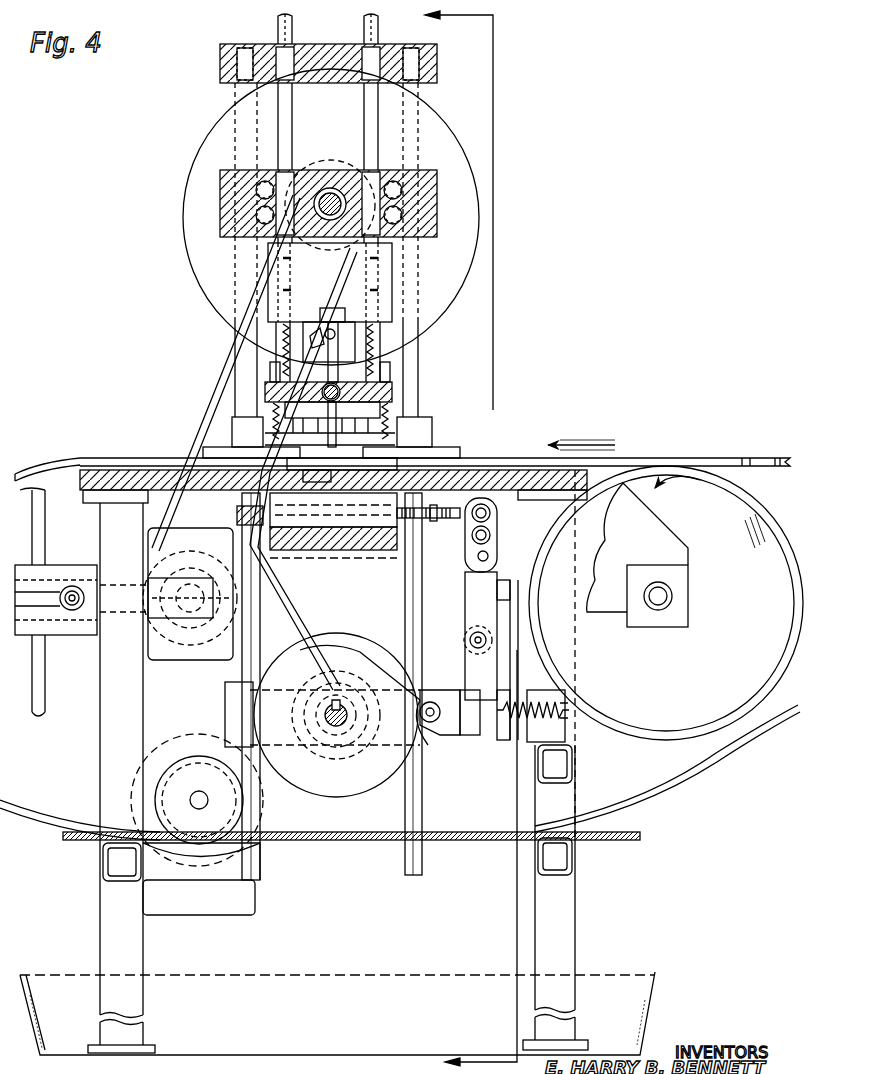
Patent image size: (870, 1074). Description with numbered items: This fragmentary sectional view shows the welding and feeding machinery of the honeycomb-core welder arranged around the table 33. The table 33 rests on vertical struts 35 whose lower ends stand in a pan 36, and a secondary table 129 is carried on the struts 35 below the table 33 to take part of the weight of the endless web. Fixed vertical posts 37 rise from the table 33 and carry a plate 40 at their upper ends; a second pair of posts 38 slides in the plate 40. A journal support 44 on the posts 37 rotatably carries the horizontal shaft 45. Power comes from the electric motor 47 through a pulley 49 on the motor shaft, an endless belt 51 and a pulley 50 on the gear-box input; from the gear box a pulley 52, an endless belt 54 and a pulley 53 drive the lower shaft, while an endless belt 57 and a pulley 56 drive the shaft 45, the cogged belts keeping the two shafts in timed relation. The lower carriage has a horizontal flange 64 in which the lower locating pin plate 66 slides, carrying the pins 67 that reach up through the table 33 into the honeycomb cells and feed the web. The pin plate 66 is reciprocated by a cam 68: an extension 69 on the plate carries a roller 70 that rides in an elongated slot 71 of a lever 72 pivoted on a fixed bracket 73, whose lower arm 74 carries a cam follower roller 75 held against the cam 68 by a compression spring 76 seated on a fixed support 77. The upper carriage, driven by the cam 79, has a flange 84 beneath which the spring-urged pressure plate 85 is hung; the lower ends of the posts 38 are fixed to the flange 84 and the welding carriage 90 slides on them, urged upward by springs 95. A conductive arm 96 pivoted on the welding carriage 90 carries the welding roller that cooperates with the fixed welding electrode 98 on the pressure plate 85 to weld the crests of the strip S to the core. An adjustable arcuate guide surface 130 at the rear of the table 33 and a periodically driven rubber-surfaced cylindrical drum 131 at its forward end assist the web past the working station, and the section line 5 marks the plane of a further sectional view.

The section line 5- 5 is at (478, 542).
The table 33 is at (115, 470).
The vertical struts 35 is at (135, 946).
The pan 36 is at (612, 982).
The vertical posts 37 is at (240, 403).
The posts 38 is at (287, 28).
The plate 40 is at (222, 63).
The journal support 44 is at (425, 192).
The horizontal shaft 45 is at (333, 190).
The electric motor 47 is at (195, 880).
The pulley 49 is at (196, 757).
The pulley 50 is at (190, 640).
The endless belt 51 is at (160, 735).
The pulley 52 is at (185, 530).
The pulley 53 is at (258, 650).
The endless belt 54 is at (288, 600).
The pulley 56 is at (322, 165).
The endless belt 57 is at (208, 398).
The horizontal flange 64 is at (345, 548).
The lower locating pin plate 66 is at (262, 552).
The pins 67 is at (317, 476).
The cam 68 is at (365, 630).
The extension 69 is at (440, 520).
The roller 70 is at (490, 513).
The elongated slot 71 is at (490, 556).
The lever 72 is at (465, 600).
The fixed bracket 73 is at (512, 590).
The arm 74 is at (448, 722).
The cam follower roller 75 is at (430, 748).
The compression spring 76 is at (503, 738).
The fixed support 77 is at (560, 730).
The cam 79 is at (435, 118).
The horizontal flange 84 is at (392, 392).
The pressure plate 85 is at (390, 442).
The welding carriage 90 is at (394, 318).
The springs 95 is at (278, 357).
The arm 96 is at (338, 370).
The fixed welding electrode 98 is at (400, 470).
The secondary table 129 is at (640, 832).
The adjustable arcuate guide surface 130 is at (50, 680).
The cylindrical drum 131 is at (666, 653).
The strip S is at (758, 458).